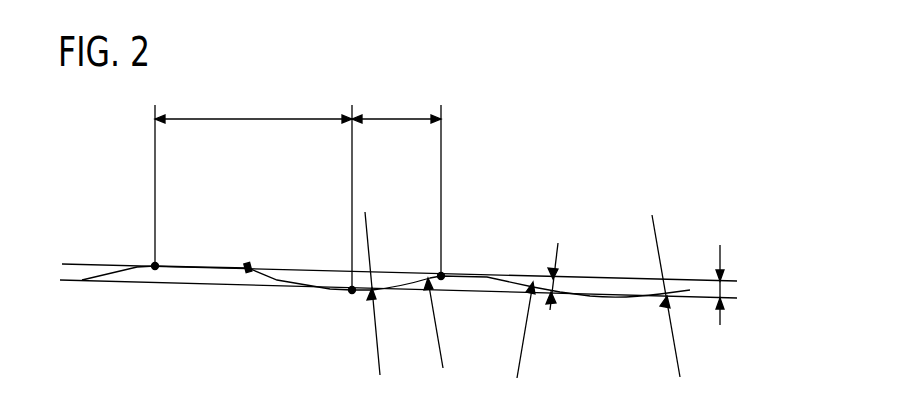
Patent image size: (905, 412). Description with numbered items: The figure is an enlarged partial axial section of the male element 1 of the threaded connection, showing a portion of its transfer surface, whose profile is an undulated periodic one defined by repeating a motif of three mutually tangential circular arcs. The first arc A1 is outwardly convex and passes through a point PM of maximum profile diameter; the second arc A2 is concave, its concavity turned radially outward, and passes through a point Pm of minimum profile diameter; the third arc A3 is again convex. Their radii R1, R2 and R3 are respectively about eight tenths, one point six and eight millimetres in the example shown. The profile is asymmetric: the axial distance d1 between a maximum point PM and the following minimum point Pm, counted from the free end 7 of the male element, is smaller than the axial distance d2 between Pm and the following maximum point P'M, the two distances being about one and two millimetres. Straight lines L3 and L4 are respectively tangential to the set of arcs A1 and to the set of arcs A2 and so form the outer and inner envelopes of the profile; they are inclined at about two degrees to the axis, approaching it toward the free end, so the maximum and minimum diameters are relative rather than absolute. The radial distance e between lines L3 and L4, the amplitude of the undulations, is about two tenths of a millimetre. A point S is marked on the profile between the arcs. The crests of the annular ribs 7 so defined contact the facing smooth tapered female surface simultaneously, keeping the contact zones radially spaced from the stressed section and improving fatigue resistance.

The male element 1 is at (204, 344).
The annular ribs 7 is at (167, 277).
The outer envelope line L3 is at (82, 263).
The inner envelope line L4 is at (137, 282).
The point S on profile S is at (248, 264).
The following maximum diameter point P'M is at (127, 234).
The minimum diameter point Pm is at (350, 288).
The maximum diameter point PM is at (443, 275).
The first arc A1 is at (430, 277).
The second arc A2 is at (328, 287).
The third arc A3 is at (273, 285).
The radius of first arc R1 is at (444, 323).
The radius of second arc R2 is at (385, 293).
The radius of third arc R3 is at (534, 330).
The first axial distance d1 is at (395, 118).
The second axial distance d2 is at (253, 120).
The undulation amplitude e is at (722, 290).